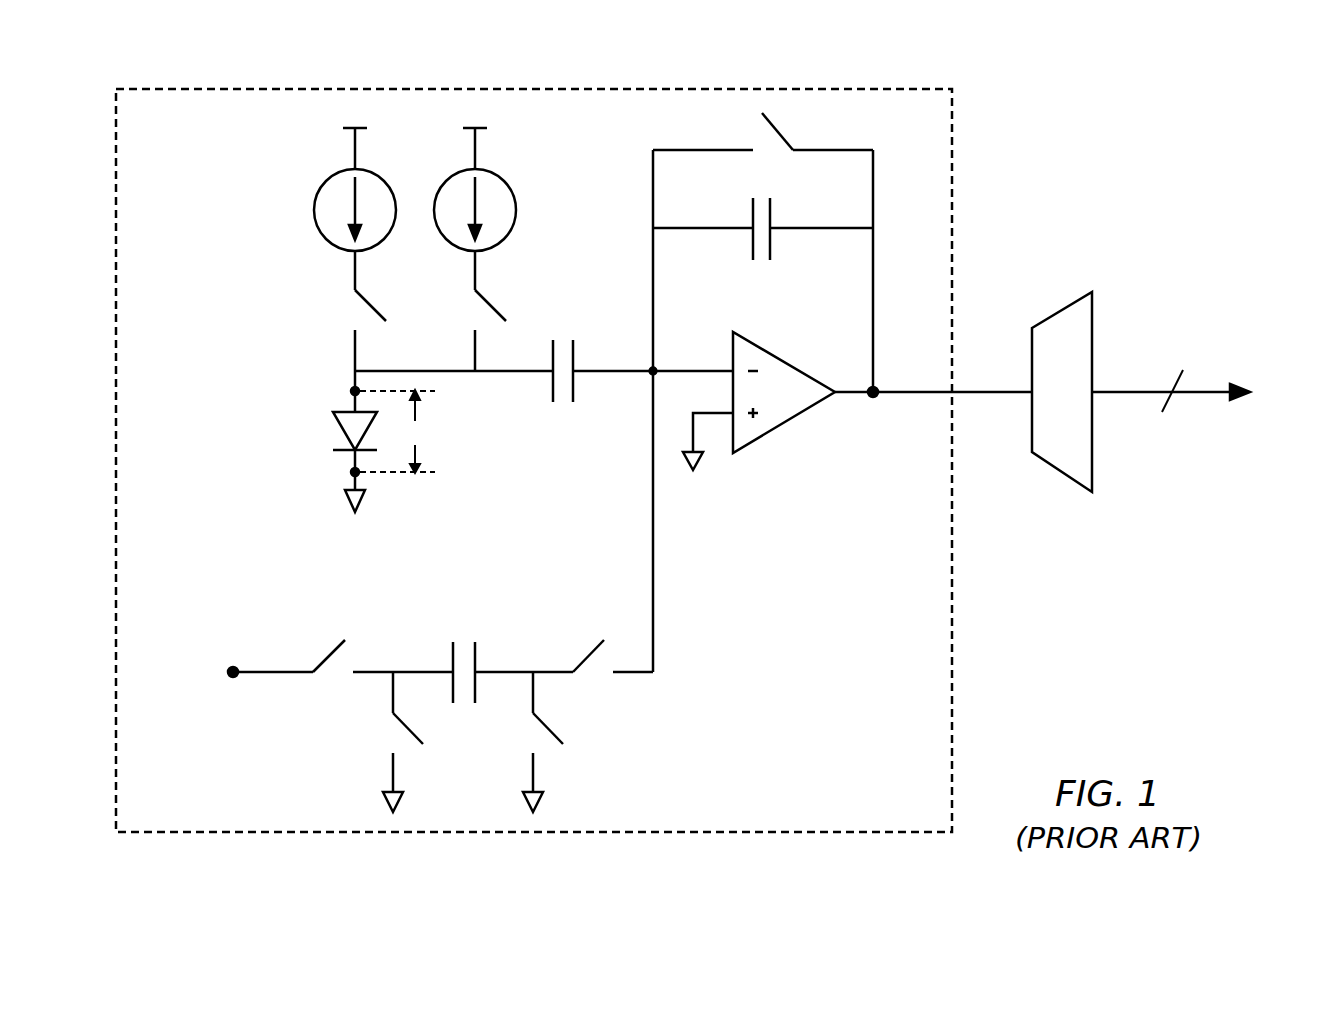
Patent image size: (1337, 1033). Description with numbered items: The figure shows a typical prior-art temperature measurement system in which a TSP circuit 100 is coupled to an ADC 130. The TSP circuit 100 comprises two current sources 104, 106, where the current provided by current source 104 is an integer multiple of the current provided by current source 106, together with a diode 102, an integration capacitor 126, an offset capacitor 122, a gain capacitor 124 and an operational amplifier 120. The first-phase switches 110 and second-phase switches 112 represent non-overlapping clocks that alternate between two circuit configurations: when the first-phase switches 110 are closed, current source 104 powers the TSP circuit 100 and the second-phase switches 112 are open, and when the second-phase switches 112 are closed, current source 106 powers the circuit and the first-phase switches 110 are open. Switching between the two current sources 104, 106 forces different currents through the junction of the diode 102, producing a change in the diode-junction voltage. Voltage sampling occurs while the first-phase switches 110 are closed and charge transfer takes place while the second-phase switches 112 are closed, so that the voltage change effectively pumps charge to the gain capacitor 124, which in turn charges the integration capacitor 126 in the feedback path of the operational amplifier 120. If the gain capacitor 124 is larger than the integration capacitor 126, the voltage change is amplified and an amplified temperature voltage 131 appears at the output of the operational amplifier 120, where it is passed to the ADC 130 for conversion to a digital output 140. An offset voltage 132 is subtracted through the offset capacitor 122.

The TSP circuit 100 is at (943, 819).
The diode 102 is at (343, 433).
The current source 104 is at (337, 170).
The current source 106 is at (457, 170).
The P1 clock switch 110 is at (365, 298).
The P2 clock switch 112 is at (485, 298).
The operational amplifier 120 is at (753, 440).
The offset capacitor 122 is at (477, 653).
The gain capacitor 124 is at (575, 350).
The integration capacitor 126 is at (752, 213).
The ADC 130 is at (1092, 308).
The Vtemp 131 is at (933, 422).
The Voffset 132 is at (190, 673).
The digital output Dout 140 is at (1205, 404).